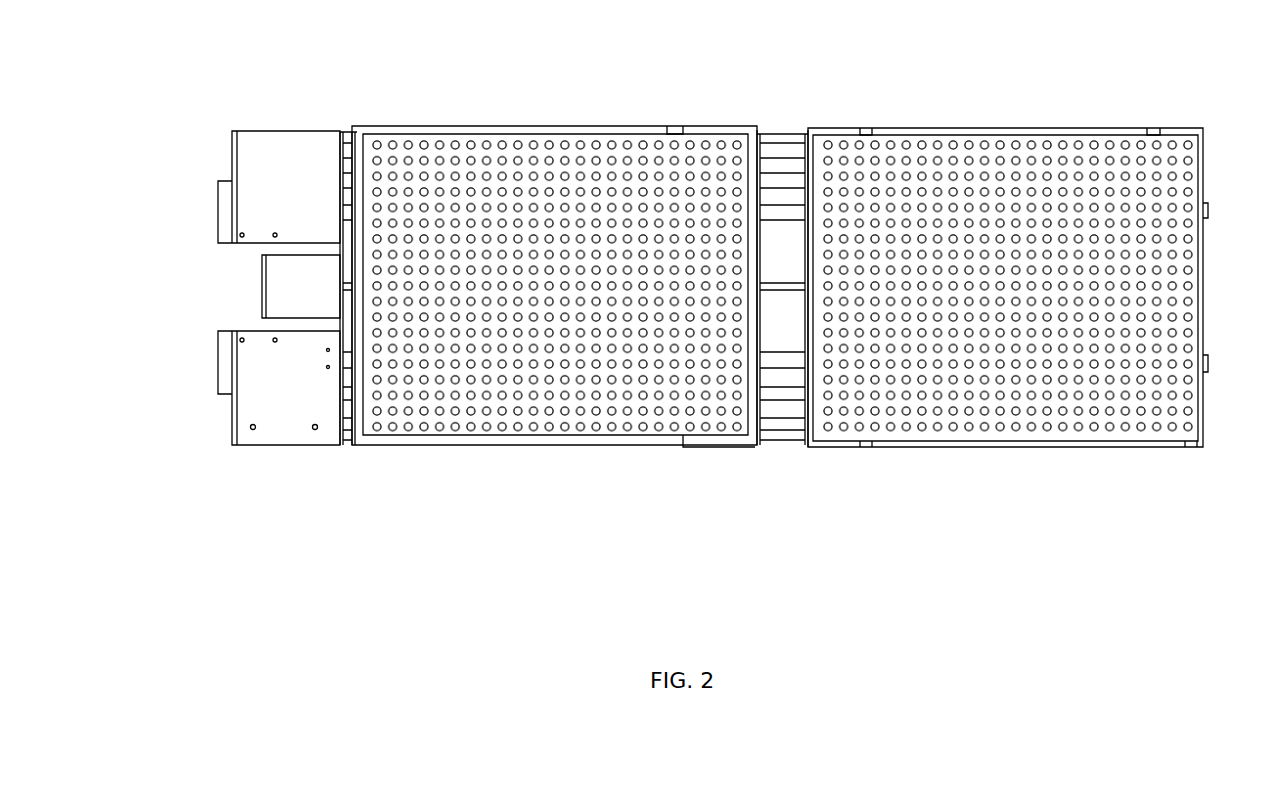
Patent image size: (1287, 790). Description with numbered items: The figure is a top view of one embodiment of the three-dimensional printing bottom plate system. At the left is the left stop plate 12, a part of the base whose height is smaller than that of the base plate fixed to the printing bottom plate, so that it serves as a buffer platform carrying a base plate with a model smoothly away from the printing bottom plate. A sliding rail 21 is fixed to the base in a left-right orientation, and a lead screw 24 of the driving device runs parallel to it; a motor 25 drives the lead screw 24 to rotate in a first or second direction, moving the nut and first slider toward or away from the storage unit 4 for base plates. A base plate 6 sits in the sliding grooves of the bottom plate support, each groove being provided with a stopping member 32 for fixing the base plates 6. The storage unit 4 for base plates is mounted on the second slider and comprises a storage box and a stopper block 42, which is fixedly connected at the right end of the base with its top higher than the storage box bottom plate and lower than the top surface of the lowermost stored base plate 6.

The storage unit for base plates 4 is at (960, 523).
The base plate 6 is at (522, 521).
The left stop plate 12 is at (300, 514).
The sliding rail 21 is at (800, 521).
The lead screw 24 is at (797, 81).
The motor 25 is at (180, 233).
The stopping member 32 is at (697, 521).
The stopper block 42 is at (1258, 523).